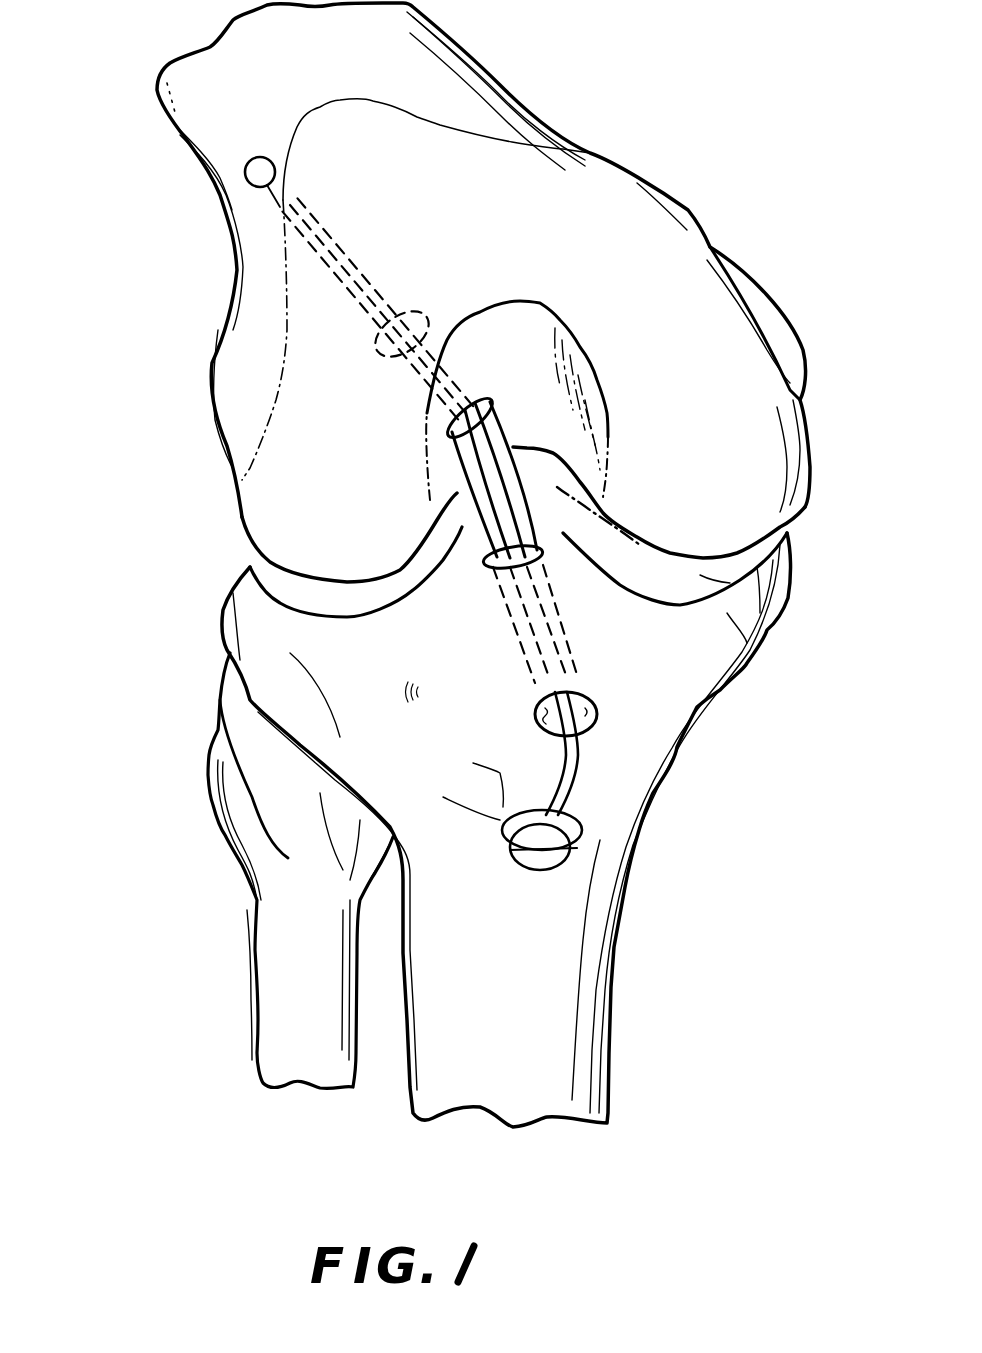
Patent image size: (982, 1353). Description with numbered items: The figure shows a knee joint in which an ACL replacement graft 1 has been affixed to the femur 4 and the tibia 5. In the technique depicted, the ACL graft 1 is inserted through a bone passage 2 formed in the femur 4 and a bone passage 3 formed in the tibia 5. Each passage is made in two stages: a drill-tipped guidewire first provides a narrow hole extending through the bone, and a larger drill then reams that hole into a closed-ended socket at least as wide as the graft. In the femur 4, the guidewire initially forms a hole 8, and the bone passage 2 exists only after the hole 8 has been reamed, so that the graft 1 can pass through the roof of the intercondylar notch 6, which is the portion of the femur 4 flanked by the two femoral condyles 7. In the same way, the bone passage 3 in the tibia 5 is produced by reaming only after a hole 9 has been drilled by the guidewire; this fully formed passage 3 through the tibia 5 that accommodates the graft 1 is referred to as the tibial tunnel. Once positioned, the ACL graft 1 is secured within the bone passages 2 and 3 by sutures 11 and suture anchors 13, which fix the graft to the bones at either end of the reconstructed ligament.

The ACL graft 1 is at (490, 403).
The bone passage 2 is at (434, 339).
The bone passage 3 is at (547, 587).
The femur 4 is at (478, 42).
The tibia 5 is at (635, 1058).
The intercondylar notch 6 is at (502, 292).
The femoral condyles 7 is at (265, 525).
The hole 8 is at (307, 250).
The hole 9 is at (547, 683).
The sutures 11 is at (280, 197).
The suture anchors 13 is at (268, 161).